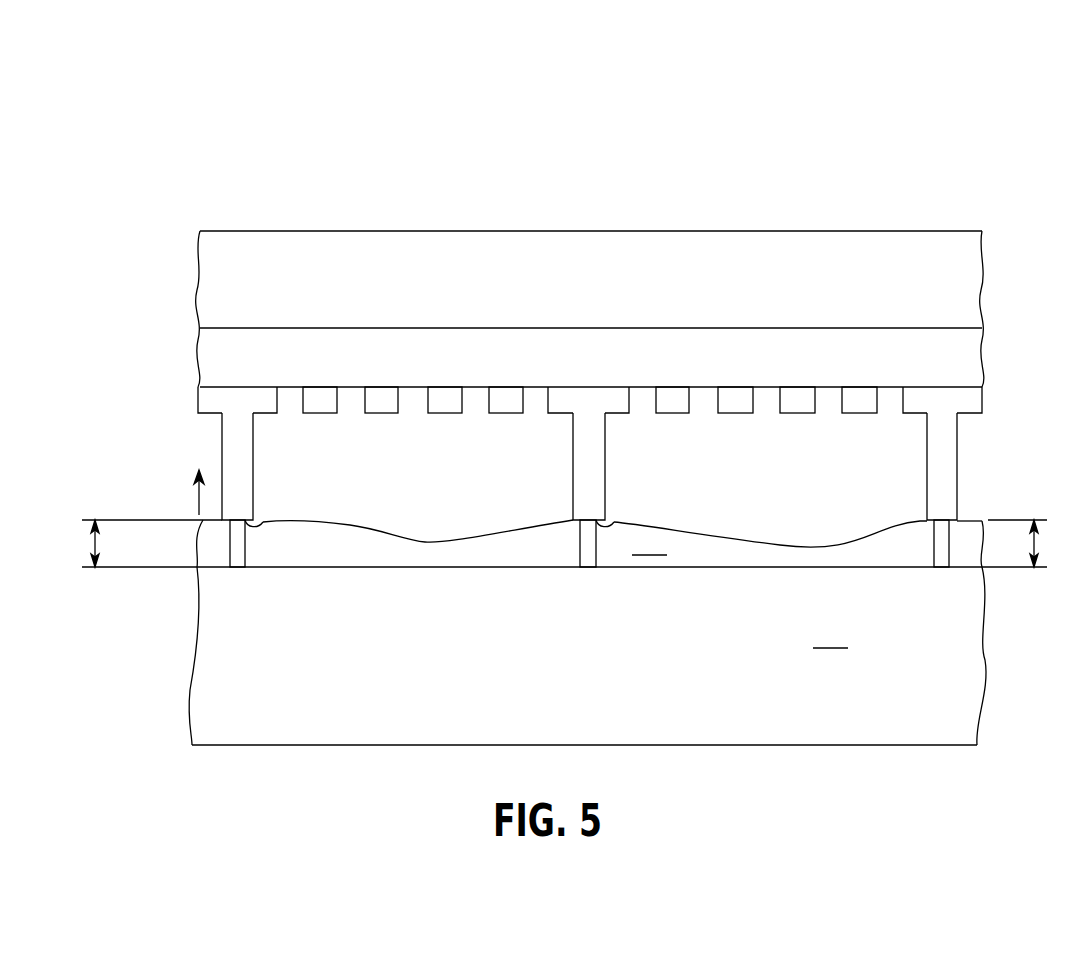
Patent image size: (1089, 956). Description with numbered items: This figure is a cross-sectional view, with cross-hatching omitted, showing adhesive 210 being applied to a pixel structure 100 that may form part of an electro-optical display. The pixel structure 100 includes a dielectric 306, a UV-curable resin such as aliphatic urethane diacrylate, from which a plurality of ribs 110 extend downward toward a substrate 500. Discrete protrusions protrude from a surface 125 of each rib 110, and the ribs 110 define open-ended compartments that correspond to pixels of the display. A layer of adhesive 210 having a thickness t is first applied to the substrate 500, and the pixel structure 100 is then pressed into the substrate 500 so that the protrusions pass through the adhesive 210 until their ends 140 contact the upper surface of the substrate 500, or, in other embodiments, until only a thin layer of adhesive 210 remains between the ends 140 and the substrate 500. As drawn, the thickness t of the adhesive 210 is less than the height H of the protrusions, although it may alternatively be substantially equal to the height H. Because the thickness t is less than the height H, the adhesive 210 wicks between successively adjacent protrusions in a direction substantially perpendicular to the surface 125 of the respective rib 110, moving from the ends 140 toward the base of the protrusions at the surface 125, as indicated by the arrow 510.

The pixel structure 100 is at (748, 112).
The dielectric 306 is at (199, 393).
The ribs 110 is at (241, 456).
The surface 125 is at (252, 526).
The adhesive 210 is at (564, 543).
The ends 140 is at (237, 568).
The substrate 500 is at (587, 656).
The arrow 510 is at (198, 503).
The height of protrusions H is at (92, 548).
The thickness of adhesive t is at (1040, 543).